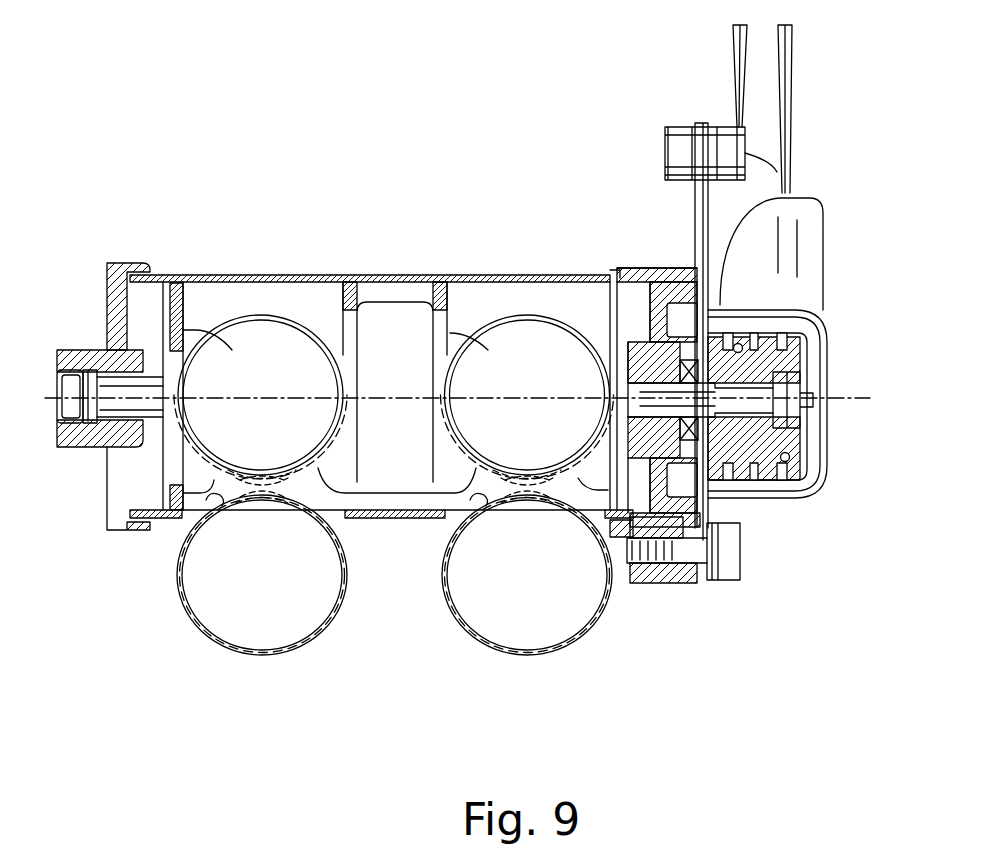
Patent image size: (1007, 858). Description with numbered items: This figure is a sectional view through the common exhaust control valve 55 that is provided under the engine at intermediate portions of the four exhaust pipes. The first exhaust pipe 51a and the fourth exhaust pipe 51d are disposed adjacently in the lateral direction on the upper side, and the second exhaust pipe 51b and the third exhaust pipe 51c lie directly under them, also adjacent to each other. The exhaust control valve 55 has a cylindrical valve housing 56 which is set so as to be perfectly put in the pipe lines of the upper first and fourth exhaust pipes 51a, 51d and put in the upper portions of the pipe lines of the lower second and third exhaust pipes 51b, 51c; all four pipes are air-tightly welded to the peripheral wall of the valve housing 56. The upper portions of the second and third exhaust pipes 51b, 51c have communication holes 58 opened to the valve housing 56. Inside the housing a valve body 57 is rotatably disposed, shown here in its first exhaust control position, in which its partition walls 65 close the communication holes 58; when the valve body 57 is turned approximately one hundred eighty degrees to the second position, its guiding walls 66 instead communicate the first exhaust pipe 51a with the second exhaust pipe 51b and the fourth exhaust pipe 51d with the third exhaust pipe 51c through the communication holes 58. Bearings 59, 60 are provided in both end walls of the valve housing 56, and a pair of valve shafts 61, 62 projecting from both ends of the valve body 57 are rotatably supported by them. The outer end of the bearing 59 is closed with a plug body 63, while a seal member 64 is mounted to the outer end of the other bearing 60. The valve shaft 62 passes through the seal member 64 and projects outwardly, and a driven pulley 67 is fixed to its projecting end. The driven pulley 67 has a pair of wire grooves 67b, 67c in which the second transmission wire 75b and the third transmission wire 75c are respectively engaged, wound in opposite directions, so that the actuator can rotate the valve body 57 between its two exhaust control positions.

The exhaust control valve 55 is at (439, 240).
The valve housing 56 is at (125, 262).
The valve body 57 is at (378, 298).
The communication holes 58 is at (510, 540).
The bearing 59 is at (108, 442).
The bearing 60 is at (650, 563).
The valve shaft 61 is at (120, 387).
The valve shaft 62 is at (660, 387).
The plug body 63 is at (56, 372).
The seal member 64 is at (715, 498).
The partition walls 65 is at (523, 480).
The guiding walls 66 is at (355, 355).
The driven pulley 67 is at (788, 362).
The wire groove 67b is at (782, 337).
The wire groove 67c is at (783, 202).
The second transmission wire 75b is at (790, 90).
The third transmission wire 75c is at (736, 78).
The first exhaust pipe 51a is at (527, 314).
The second exhaust pipe 51b is at (522, 657).
The third exhaust pipe 51c is at (248, 657).
The fourth exhaust pipe 51d is at (261, 314).